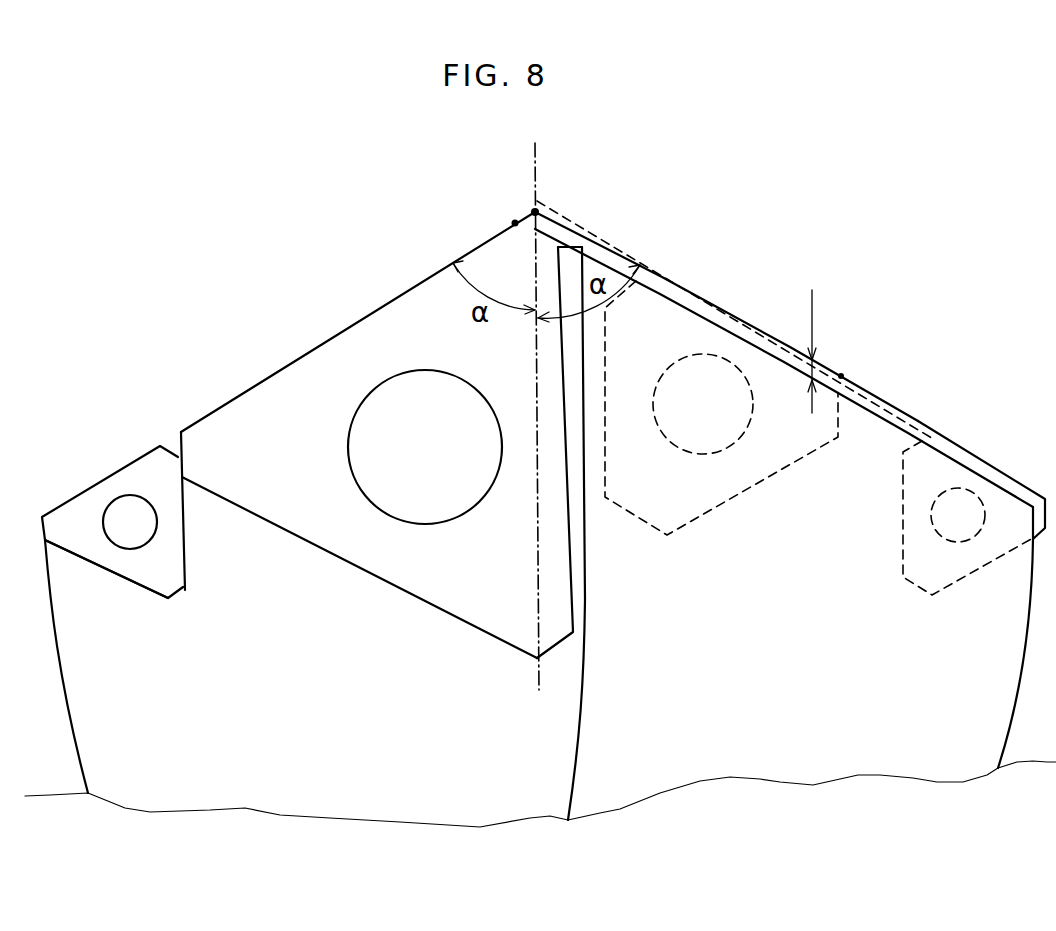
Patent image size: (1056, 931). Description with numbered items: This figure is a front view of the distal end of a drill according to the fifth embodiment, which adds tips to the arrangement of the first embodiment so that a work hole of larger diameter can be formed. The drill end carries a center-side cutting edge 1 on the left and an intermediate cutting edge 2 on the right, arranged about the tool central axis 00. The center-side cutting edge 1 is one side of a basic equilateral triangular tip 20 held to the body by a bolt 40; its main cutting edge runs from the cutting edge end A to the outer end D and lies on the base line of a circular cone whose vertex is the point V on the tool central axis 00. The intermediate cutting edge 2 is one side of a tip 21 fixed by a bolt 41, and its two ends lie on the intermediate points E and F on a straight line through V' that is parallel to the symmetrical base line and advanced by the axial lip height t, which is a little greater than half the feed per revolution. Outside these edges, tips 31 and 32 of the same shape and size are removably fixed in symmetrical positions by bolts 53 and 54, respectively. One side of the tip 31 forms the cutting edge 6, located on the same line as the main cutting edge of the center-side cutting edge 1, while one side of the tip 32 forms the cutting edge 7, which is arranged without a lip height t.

The center-side cutting edge 1 is at (323, 345).
The intermediate cutting edge 2 is at (735, 316).
The cutting edge 6 is at (107, 475).
The cutting edge 7 is at (957, 445).
The basic equilateral triangular tip 20 is at (370, 578).
The basic equilateral triangular tip 21 is at (733, 498).
The tip 31 is at (143, 592).
The tip 32 is at (955, 585).
The bolt 40 is at (400, 520).
The bolt 41 is at (665, 440).
The bolt 53 is at (160, 533).
The bolt 54 is at (931, 524).
The tool central axis 00 is at (538, 523).
The cutting edge end A is at (514, 223).
The vertex point V is at (498, 183).
The point on straight line V'Q' V' is at (570, 172).
The outer end D is at (181, 432).
The intermediate point E is at (665, 278).
The intermediate point F is at (841, 376).
The axial lip height t is at (818, 351).